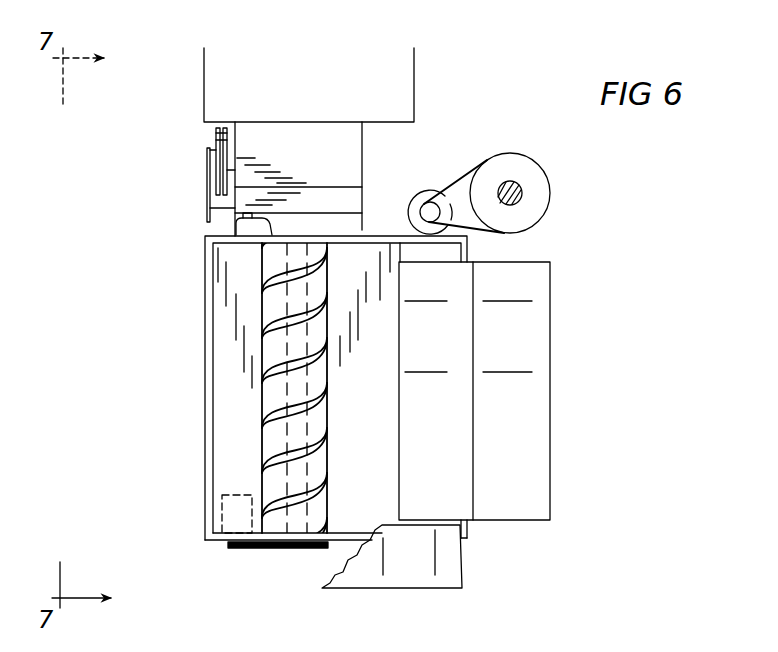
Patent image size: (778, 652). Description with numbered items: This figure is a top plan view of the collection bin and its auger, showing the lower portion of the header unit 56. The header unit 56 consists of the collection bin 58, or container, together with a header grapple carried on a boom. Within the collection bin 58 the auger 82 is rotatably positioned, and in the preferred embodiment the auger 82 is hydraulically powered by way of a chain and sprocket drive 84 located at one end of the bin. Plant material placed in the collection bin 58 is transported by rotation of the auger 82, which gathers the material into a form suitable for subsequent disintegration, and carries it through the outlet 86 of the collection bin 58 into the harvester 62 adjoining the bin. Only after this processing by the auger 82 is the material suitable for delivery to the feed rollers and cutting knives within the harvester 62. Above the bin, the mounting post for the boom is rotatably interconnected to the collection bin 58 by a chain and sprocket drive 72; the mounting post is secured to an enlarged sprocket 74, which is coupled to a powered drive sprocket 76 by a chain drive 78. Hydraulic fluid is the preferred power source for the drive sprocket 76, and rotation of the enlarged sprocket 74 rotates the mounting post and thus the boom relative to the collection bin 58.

The header unit 56 is at (590, 310).
The collection bin 58 is at (207, 430).
The harvester 62 is at (262, 134).
The chain and sprocket drive 72 is at (505, 150).
The enlarged sprocket 74 is at (545, 193).
The drive sprocket 76 is at (412, 202).
The chain drive 78 is at (460, 196).
The auger 82 is at (282, 310).
The chain and sprocket drive 84 is at (270, 548).
The outlet 86 is at (238, 218).